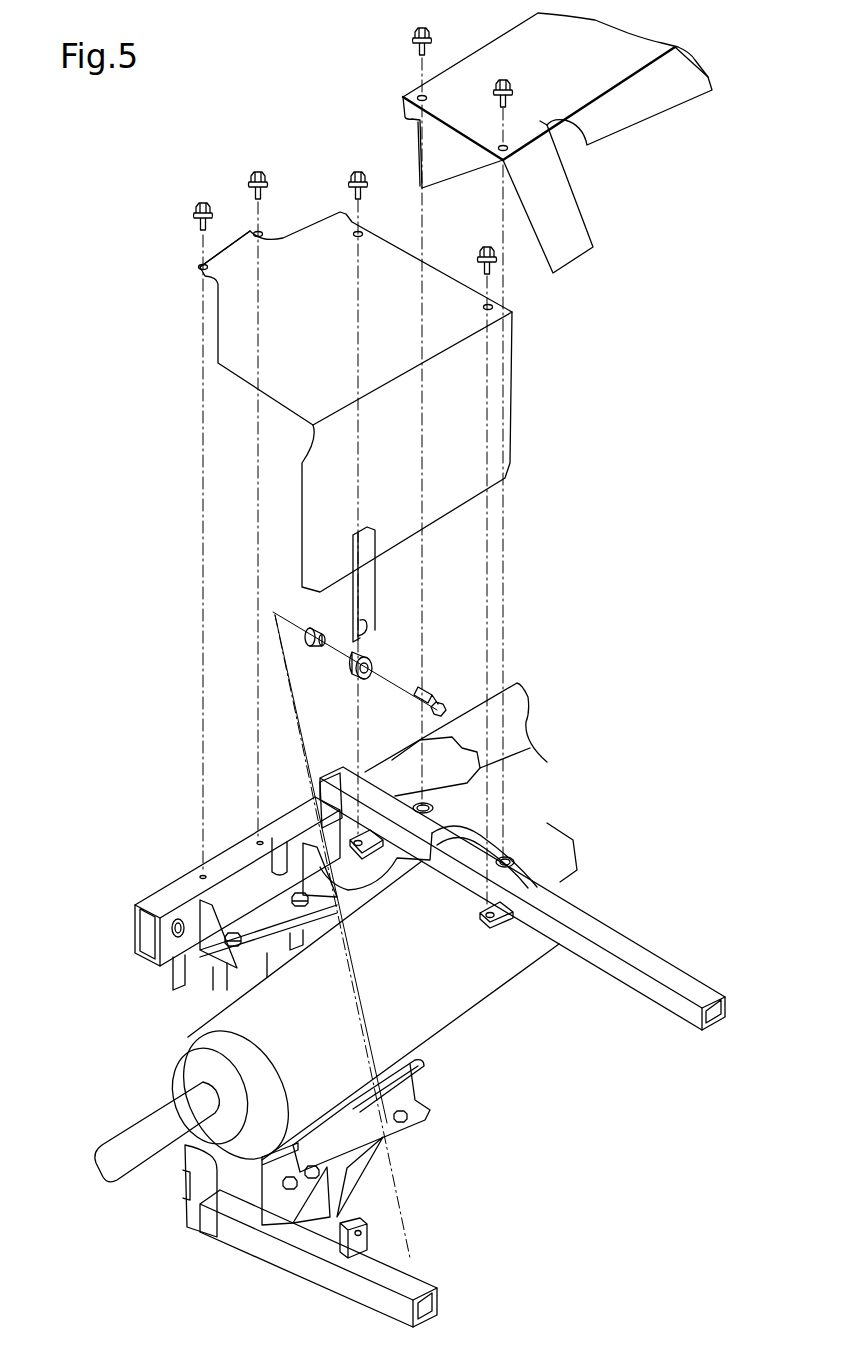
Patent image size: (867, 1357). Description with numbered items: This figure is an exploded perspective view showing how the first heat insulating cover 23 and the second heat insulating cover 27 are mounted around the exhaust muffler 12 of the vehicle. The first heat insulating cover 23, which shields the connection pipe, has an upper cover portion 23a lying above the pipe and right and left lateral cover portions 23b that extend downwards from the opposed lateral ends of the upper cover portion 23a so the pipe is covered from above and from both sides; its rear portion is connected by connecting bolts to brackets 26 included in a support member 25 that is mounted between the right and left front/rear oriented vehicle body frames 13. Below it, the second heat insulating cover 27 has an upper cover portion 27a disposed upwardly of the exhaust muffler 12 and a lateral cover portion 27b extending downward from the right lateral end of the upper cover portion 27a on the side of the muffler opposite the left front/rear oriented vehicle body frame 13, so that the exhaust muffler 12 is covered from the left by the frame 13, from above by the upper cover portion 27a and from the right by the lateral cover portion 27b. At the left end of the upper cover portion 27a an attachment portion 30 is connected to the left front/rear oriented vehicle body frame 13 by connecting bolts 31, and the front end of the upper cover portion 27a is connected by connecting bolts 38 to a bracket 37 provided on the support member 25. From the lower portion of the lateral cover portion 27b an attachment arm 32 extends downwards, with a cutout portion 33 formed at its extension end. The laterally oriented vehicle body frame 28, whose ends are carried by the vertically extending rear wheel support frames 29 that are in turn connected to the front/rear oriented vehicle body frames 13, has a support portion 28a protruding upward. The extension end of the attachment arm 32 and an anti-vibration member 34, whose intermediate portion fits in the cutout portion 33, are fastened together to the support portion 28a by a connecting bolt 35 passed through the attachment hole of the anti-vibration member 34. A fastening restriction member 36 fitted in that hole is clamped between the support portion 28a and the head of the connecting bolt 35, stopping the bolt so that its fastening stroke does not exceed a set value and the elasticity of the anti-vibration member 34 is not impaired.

The exhaust muffler 12 is at (462, 1016).
The front/rear oriented vehicle body frame 13 is at (170, 885).
The first heat insulating cover 23 is at (660, 116).
The upper cover portion 23a is at (516, 50).
The lateral cover portion 23b is at (413, 140).
The support member 25 is at (623, 945).
The bracket 26 is at (467, 783).
The second heat insulating cover 27 is at (391, 402).
The upper cover portion 27a is at (240, 328).
The lateral cover portion 27b is at (500, 435).
The laterally oriented vehicle body frame 28 is at (258, 1237).
The support portion 28a is at (345, 1238).
The rear wheel support frame 29 is at (200, 1008).
The attachment portion 30 is at (235, 247).
The connecting bolt 31 is at (200, 200).
The attachment arm 32 is at (368, 603).
The cutout portion 33 is at (364, 634).
The anti-vibration member 34 is at (356, 678).
The connecting bolt 35 is at (432, 700).
The fastening restriction member 36 is at (313, 628).
The bracket 37 is at (378, 858).
The connecting bolt 38 is at (352, 174).